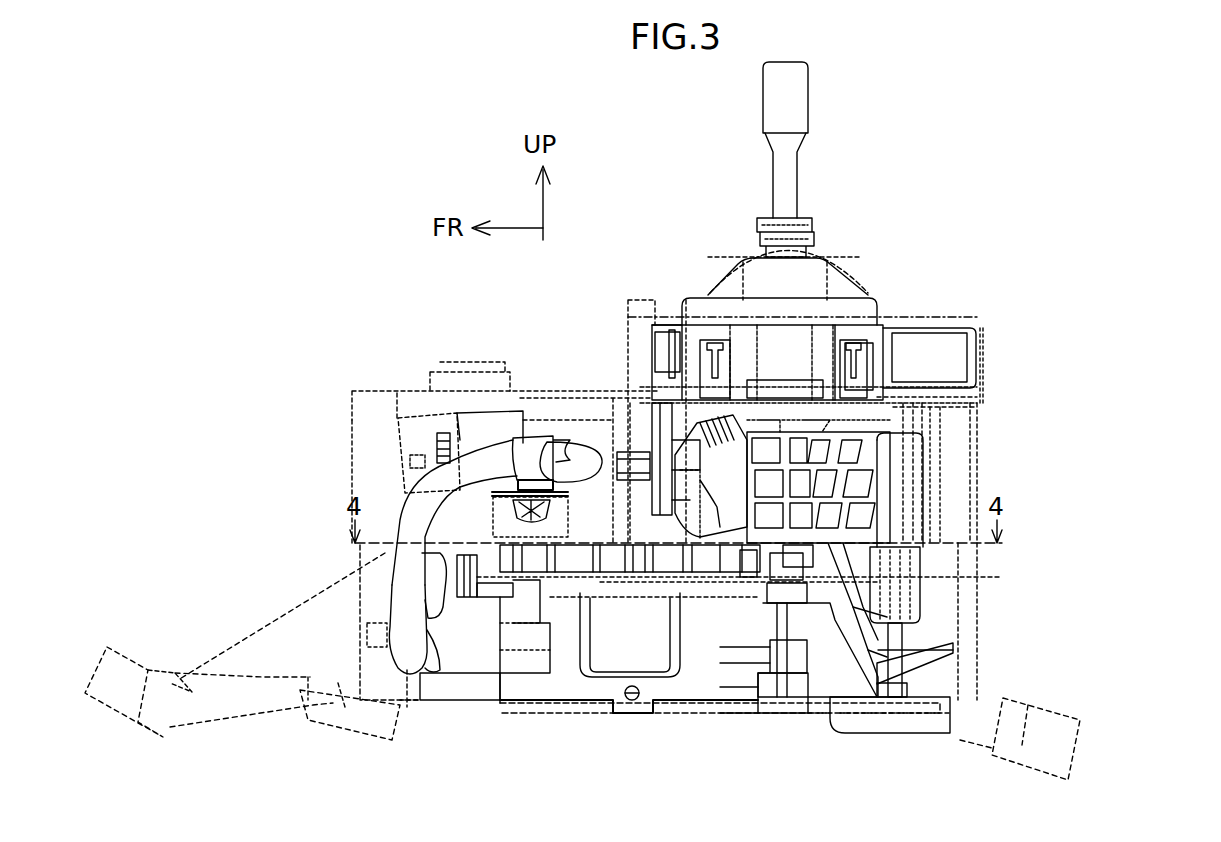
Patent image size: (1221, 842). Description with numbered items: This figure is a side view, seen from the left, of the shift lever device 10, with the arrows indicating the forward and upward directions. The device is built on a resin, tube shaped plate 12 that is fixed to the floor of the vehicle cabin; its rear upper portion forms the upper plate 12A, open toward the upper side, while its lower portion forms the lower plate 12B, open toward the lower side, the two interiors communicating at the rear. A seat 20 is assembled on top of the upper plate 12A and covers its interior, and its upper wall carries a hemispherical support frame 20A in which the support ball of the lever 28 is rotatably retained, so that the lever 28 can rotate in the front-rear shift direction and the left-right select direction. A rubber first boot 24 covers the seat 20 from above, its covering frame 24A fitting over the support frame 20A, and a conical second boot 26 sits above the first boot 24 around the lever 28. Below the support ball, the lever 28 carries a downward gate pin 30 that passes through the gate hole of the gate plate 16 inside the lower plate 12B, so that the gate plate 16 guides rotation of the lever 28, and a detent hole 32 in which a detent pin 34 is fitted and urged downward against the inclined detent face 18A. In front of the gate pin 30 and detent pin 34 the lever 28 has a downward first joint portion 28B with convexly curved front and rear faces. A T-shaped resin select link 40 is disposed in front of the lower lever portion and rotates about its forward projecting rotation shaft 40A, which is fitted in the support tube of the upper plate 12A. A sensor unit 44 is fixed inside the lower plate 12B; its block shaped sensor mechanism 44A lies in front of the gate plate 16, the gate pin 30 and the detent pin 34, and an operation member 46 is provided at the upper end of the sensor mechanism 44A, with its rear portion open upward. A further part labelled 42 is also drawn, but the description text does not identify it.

The shift lever device 10 is at (949, 188).
The plate 12 is at (979, 425).
The upper plate 12A is at (976, 461).
The lower plate 12B is at (980, 634).
The gate plate 16 is at (953, 646).
The detent face 18A is at (907, 655).
The seat 20 is at (656, 393).
The support frame 20A is at (862, 292).
The first boot 24 is at (624, 318).
The covering frame 24A is at (712, 290).
The second boot 26 is at (833, 232).
The lever 28 is at (824, 117).
The first joint portion 28B is at (793, 545).
The gate pin 30 is at (903, 646).
The detent hole 32 is at (862, 617).
The detent pin 34 is at (907, 683).
The select link 40 is at (662, 393).
The rotation shaft 40A is at (636, 460).
The lever 42 is at (722, 495).
The sensor unit 44 is at (905, 734).
The sensor mechanism 44A is at (727, 713).
The operation member 46 is at (780, 605).